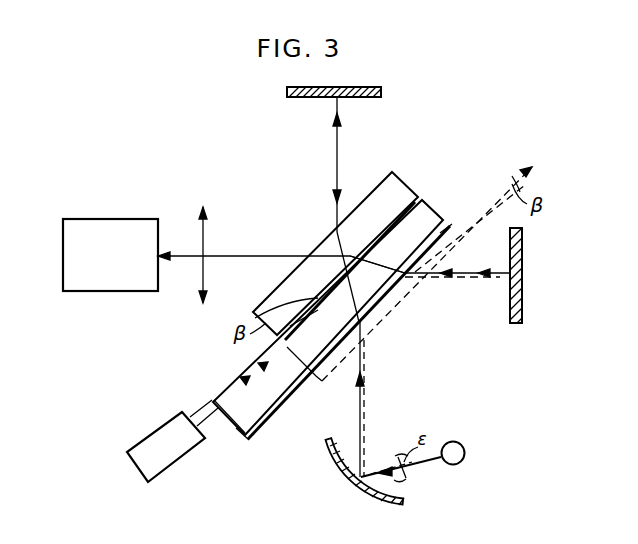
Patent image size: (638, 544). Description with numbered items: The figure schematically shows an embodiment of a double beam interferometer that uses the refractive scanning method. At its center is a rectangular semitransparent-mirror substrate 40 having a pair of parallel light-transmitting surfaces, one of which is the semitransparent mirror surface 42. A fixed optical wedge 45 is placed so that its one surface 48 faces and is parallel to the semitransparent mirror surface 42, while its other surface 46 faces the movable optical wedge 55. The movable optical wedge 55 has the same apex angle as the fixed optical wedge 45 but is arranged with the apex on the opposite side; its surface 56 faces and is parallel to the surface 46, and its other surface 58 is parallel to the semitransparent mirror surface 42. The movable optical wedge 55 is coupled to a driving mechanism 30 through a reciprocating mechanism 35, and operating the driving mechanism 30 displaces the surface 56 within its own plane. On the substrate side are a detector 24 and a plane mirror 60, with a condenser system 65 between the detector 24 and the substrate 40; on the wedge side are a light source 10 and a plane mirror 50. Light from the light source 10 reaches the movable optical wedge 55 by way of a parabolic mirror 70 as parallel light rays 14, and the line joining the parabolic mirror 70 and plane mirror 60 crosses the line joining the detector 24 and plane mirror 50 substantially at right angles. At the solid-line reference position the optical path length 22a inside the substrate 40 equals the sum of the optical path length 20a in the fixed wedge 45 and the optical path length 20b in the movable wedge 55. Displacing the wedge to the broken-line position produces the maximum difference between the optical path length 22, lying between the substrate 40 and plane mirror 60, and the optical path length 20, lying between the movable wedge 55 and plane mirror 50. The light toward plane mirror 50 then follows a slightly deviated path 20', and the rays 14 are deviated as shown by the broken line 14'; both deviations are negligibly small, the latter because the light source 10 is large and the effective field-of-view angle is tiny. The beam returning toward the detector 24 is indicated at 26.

The light source 10 is at (465, 450).
The parallel light rays 14 is at (383, 399).
The deviated light rays 14' is at (391, 408).
The optical path length 20 is at (452, 294).
The deviated optical path 20' is at (470, 261).
The optical path length in fixed optical wedge 20a is at (372, 297).
The optical path length in movable optical wedge 20b is at (398, 290).
The optical path length 22 is at (333, 163).
The optical path length in semitransparent-mirror substrate 22a is at (347, 235).
The detector 24 is at (114, 219).
The output beam to detector 26 is at (265, 254).
The driving mechanism 30 is at (155, 432).
The reciprocating mechanism 35 is at (200, 418).
The semitransparent-mirror substrate 40 is at (296, 288).
The semitransparent mirror surface 42 is at (394, 225).
The fixed optical wedge 45 is at (446, 221).
The other surface of fixed optical wedge 46 is at (432, 220).
The surface of fixed optical wedge 48 is at (421, 198).
The plane mirror 50 is at (514, 323).
The movable optical wedge 55 is at (246, 437).
The surface of movable optical wedge 56 is at (245, 378).
The other surface of movable optical wedge 58 is at (275, 406).
The plane mirror 60 is at (306, 98).
The condenser system 65 is at (203, 237).
The parabolic mirror 70 is at (400, 498).